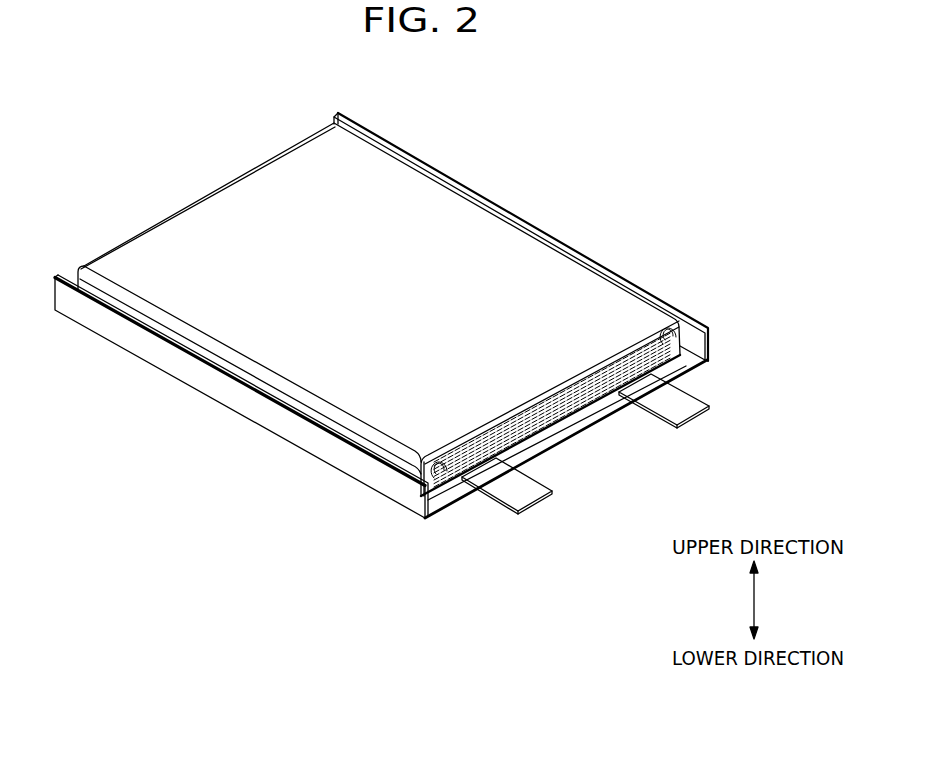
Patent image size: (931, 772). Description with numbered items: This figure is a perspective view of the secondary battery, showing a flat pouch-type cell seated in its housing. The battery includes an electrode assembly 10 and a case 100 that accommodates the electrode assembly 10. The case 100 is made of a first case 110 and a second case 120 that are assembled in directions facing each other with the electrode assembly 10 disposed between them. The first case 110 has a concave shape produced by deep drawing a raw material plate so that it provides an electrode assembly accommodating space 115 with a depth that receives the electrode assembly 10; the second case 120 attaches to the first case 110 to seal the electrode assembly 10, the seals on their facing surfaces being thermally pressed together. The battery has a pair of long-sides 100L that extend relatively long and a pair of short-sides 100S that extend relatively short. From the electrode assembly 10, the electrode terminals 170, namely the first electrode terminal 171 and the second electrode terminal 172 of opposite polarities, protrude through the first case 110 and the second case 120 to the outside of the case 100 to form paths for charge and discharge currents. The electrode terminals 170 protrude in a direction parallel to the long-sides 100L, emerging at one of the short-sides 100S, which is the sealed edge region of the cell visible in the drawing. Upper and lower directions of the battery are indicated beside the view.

The case 100 is at (381, 363).
The first case 110 is at (382, 345).
The electrode assembly accommodating space 115 is at (220, 203).
The second case 120 is at (452, 507).
The long-sides 100L is at (247, 370).
The short-sides 100S is at (553, 406).
The electrode assembly 10 is at (550, 418).
The electrode terminals 170 is at (615, 478).
The first electrode terminal 171 is at (539, 520).
The second electrode terminal 172 is at (694, 435).